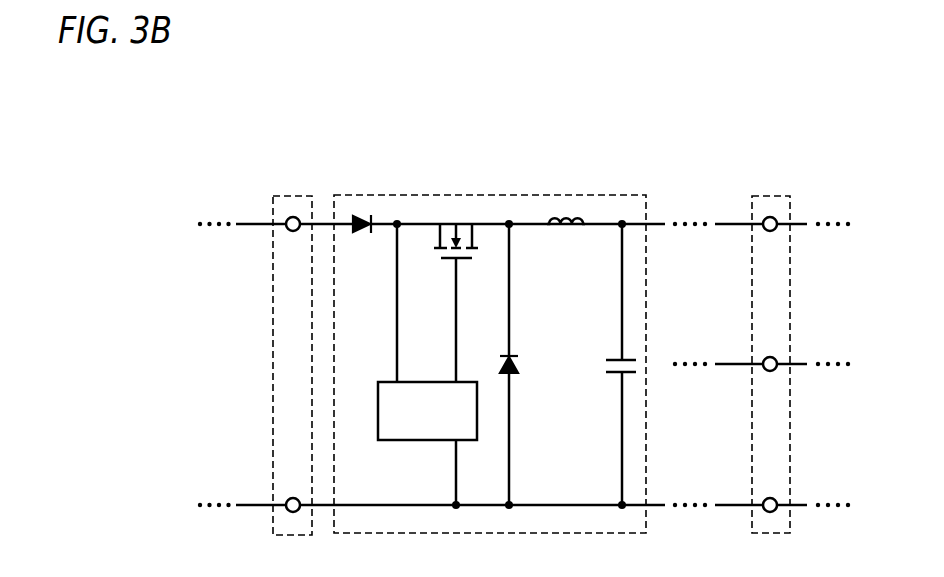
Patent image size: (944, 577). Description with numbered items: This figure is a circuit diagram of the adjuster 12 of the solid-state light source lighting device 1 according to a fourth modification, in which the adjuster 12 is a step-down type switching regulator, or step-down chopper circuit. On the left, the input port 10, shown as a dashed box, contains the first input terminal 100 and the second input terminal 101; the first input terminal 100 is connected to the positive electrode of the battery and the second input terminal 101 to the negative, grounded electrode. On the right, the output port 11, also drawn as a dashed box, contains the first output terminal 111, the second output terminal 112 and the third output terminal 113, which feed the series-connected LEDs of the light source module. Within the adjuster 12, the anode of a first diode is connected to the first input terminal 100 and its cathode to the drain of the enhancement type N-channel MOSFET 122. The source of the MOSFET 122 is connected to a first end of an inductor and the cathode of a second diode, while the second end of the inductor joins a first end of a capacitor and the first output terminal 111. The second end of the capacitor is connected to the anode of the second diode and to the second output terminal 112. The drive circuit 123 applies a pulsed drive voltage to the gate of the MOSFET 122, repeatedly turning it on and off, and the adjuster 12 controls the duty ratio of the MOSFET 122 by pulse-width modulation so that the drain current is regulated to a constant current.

The solid-state light source lighting device 1 is at (656, 150).
The input port 10 is at (287, 189).
The output port 11 is at (777, 186).
The adjuster 12 is at (541, 186).
The first input terminal 100 is at (287, 218).
The second input terminal 101 is at (287, 511).
The first output terminal 111 is at (765, 219).
The second output terminal 112 is at (764, 512).
The third output terminal 113 is at (764, 371).
The MOSFET 122 is at (447, 262).
The drive circuit 123 is at (416, 423).